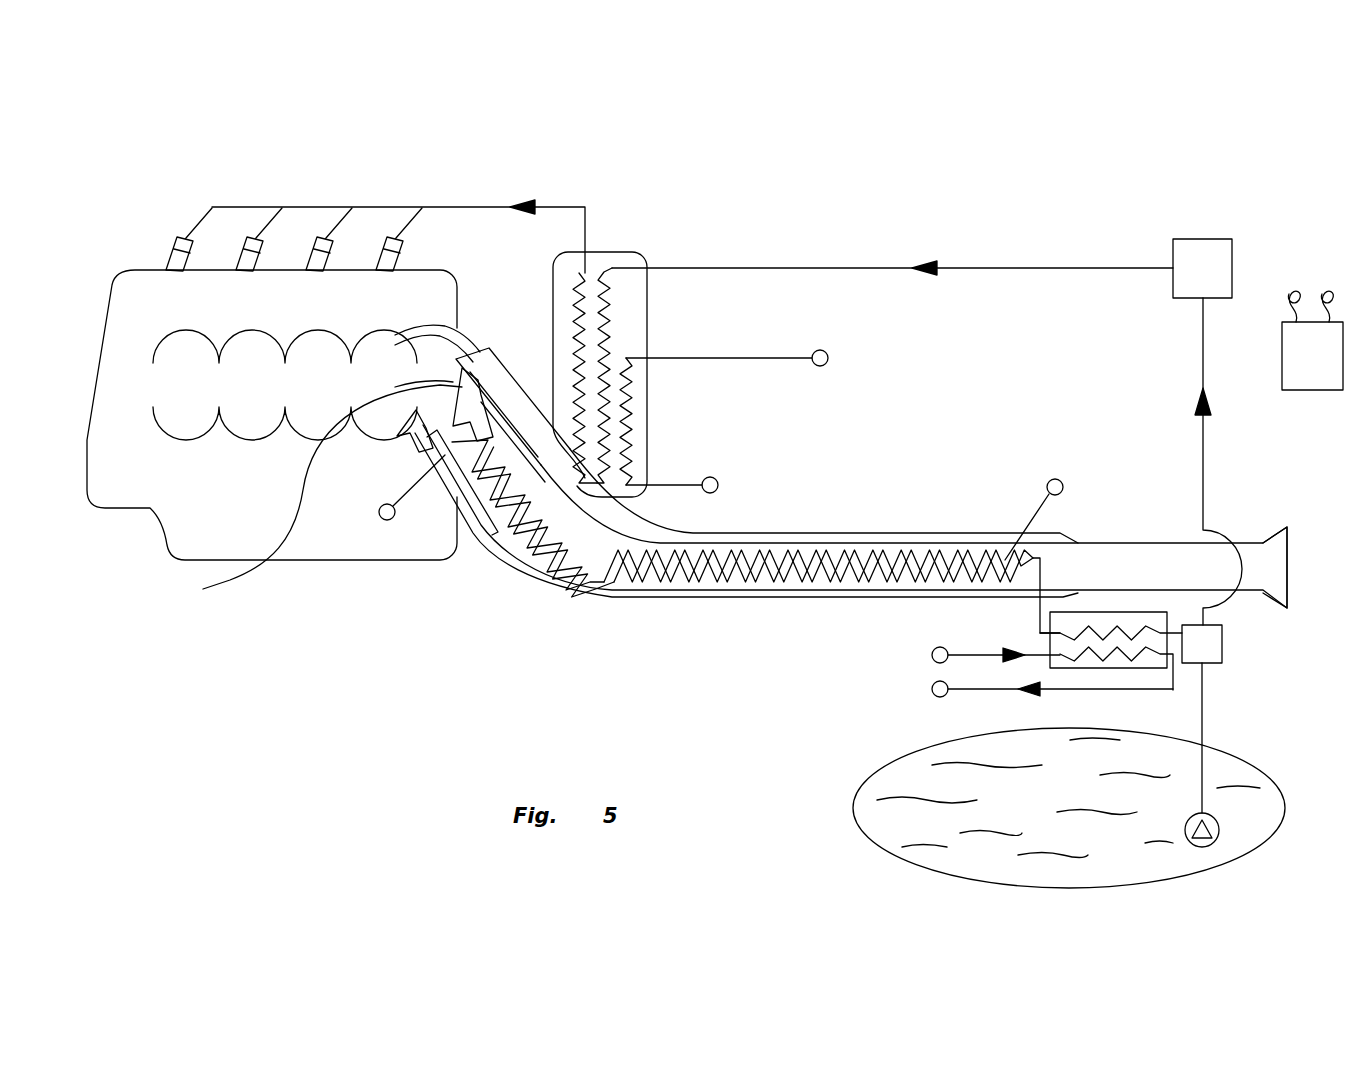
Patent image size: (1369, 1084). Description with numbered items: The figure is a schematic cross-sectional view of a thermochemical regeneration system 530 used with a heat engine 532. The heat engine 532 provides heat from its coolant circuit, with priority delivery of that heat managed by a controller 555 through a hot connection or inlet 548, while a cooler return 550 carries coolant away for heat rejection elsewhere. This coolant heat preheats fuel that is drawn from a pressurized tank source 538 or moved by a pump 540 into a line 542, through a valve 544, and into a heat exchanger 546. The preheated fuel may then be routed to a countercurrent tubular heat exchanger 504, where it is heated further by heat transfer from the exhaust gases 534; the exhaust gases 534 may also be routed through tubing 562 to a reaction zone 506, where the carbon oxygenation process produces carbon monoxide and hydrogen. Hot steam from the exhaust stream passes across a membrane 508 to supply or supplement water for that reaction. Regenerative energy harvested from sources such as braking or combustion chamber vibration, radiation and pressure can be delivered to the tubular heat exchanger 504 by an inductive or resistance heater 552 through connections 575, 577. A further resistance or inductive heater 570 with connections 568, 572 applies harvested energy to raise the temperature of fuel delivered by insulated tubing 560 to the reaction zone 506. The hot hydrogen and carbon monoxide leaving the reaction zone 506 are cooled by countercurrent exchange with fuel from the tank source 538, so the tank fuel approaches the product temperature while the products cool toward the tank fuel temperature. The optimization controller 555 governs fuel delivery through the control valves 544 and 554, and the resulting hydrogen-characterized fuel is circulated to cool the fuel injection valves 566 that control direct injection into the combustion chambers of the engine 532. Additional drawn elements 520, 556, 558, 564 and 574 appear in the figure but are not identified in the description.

The countercurrent heat exchanger 504 is at (740, 572).
The reaction zone 506 is at (415, 453).
The membrane 508 is at (513, 392).
The exhaust outlet 520 is at (1295, 545).
The thermochemical regeneration system 530 is at (318, 638).
The heat engine 532 is at (130, 307).
The exhaust gases 534 is at (612, 578).
The tank source 538 is at (1243, 760).
The pump 540 is at (1207, 847).
The line 542 is at (1204, 700).
The valve 544 is at (1225, 642).
The heat exchanger 546 is at (1043, 643).
The hot connection 548 is at (932, 656).
The cooler return 550 is at (935, 695).
The inductive or resistance heater 552 is at (856, 545).
The control valve 554 is at (1190, 239).
The controller 555 is at (1313, 392).
The exhaust heat exchanger 556 is at (647, 312).
The heat exchanger coil 558 is at (573, 273).
The insulated tubing 560 is at (487, 343).
The tubing 562 is at (320, 464).
The exhaust pipe wall 564 is at (478, 522).
The fuel injection valves 566 is at (185, 242).
The connection 568 is at (826, 352).
The resistance or inductive heater 570 is at (640, 395).
The connection 572 is at (716, 480).
The return conduit 574 is at (633, 250).
The connection 575 is at (1057, 481).
The connection 577 is at (387, 520).